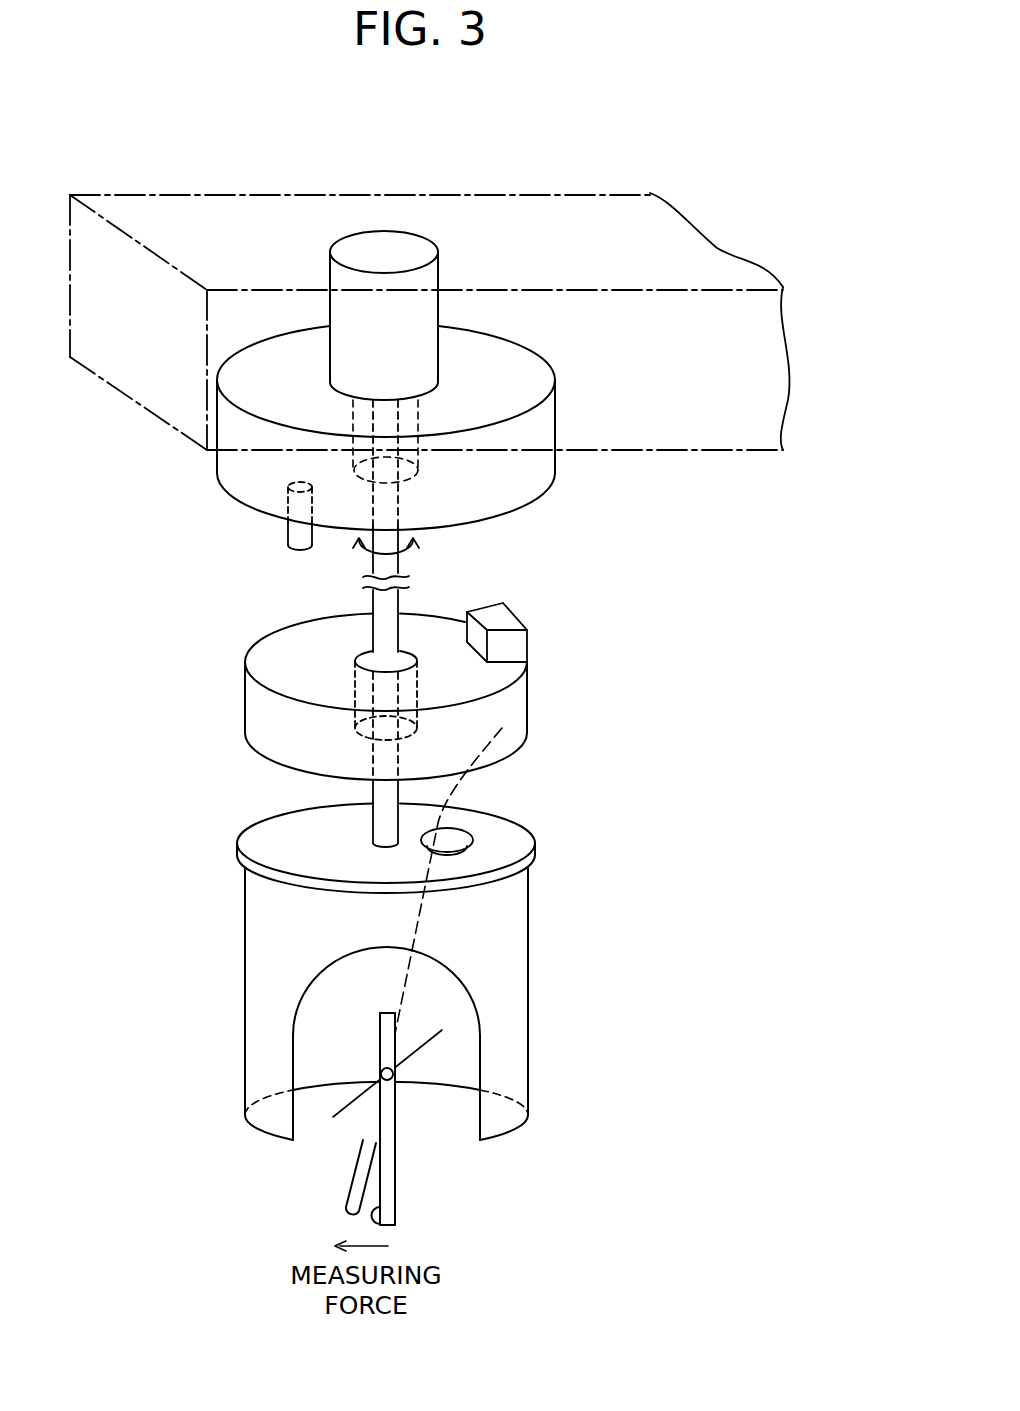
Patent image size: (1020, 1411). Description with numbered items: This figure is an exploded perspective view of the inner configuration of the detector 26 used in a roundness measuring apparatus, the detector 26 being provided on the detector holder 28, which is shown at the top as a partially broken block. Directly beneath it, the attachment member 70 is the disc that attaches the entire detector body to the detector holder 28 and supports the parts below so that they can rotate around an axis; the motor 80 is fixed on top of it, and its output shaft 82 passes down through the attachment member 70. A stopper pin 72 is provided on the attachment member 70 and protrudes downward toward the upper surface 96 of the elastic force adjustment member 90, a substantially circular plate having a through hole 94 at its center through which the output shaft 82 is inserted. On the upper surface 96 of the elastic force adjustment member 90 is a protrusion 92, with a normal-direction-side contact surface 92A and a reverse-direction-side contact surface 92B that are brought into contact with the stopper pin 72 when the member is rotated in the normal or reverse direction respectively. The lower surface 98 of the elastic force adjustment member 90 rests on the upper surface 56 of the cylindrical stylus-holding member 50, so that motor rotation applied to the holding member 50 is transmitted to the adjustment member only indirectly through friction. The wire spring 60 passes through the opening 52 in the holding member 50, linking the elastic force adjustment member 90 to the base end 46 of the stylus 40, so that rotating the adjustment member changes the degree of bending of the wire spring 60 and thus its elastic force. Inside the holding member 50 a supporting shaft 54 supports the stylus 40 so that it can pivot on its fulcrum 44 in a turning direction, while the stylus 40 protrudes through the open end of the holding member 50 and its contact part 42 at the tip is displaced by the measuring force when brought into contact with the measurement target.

The detector 26 is at (676, 965).
The detector holder 28 is at (725, 428).
The stylus 40 is at (397, 1195).
The contact part 42 is at (340, 1205).
The fulcrum 44 is at (380, 1073).
The base end 46 is at (378, 1035).
The stylus-holding member 50 is at (520, 960).
The opening 52 is at (520, 862).
The supporting shaft 54 is at (422, 1052).
The upper surface 56 is at (287, 842).
The wire spring 60 is at (440, 792).
The attachment member 70 is at (505, 482).
The stopper pin 72 is at (288, 536).
The motor 80 is at (384, 252).
The output shaft 82 is at (387, 632).
The elastic force adjustment member 90 is at (532, 720).
The protrusion 92 is at (547, 633).
The normal-direction-side contact surface 92A is at (507, 642).
The reverse-direction-side contact surface 92B is at (500, 600).
The through hole 94 is at (363, 657).
The upper surface 96 is at (285, 660).
The lower surface 98 is at (283, 765).